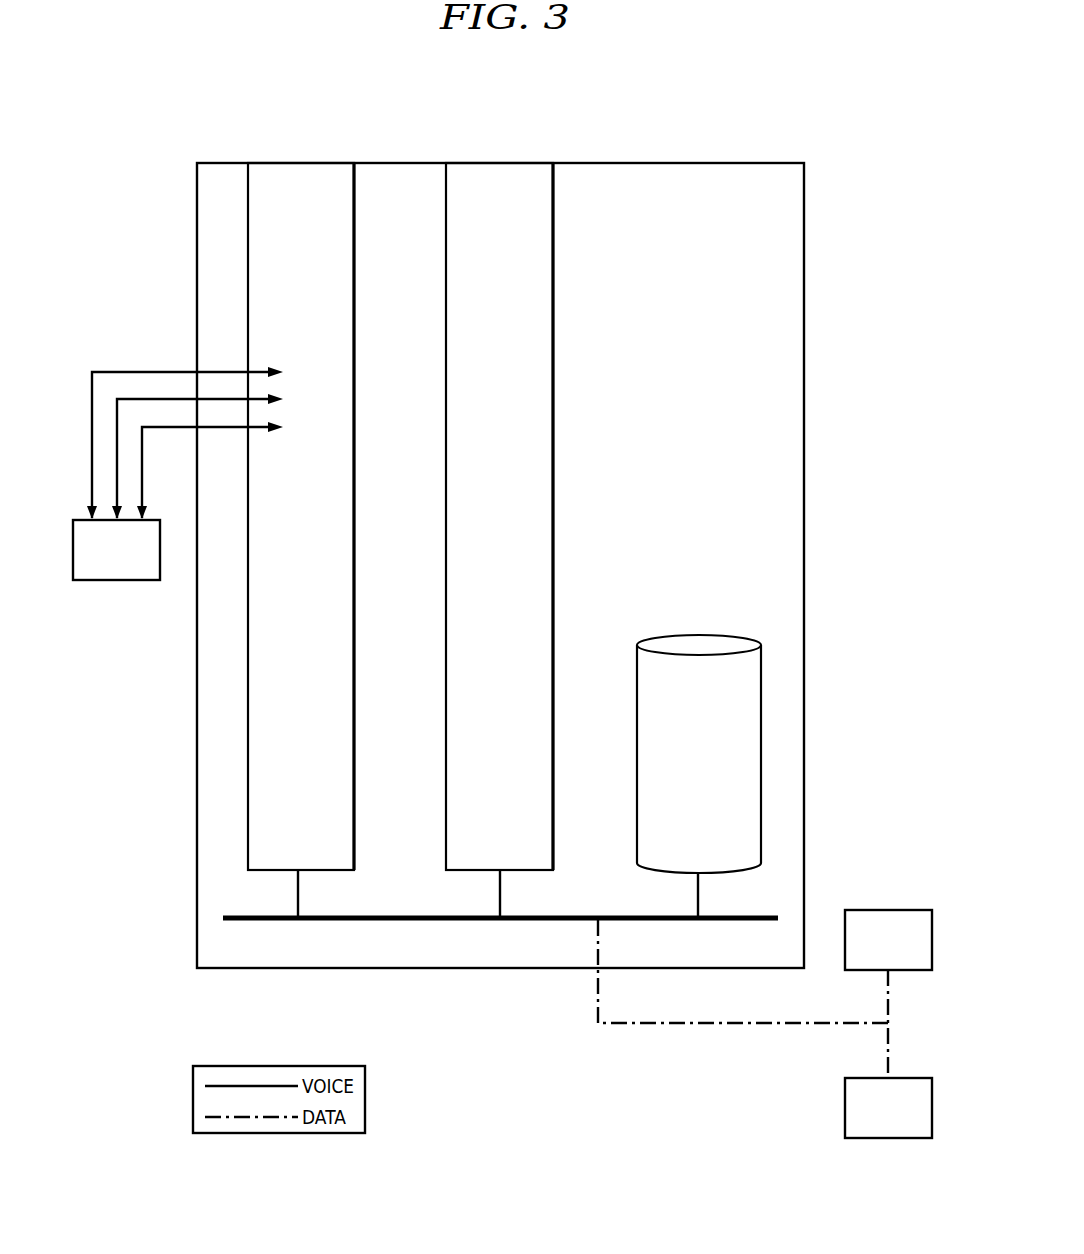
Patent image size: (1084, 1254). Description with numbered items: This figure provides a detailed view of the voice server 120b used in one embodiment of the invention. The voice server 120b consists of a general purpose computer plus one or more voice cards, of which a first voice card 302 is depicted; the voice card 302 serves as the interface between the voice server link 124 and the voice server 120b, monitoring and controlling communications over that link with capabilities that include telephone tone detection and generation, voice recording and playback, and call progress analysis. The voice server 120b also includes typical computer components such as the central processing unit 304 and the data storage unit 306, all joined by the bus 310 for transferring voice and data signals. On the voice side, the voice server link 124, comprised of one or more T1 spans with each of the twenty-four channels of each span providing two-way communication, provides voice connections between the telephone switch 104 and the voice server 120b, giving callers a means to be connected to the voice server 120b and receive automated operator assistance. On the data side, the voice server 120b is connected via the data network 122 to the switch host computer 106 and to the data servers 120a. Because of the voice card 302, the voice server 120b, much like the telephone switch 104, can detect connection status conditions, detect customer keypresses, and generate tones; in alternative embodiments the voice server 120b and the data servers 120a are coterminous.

The voice server 120b is at (805, 203).
The voice card 302 is at (302, 163).
The central processing unit 304 is at (501, 163).
The data storage unit 306 is at (701, 636).
The bus 310 is at (418, 921).
The voice server link 124 is at (159, 372).
The telephone switch 104 is at (116, 550).
The data network 122 is at (655, 1026).
The data servers 120a is at (888, 940).
The switch host computer 106 is at (888, 1108).